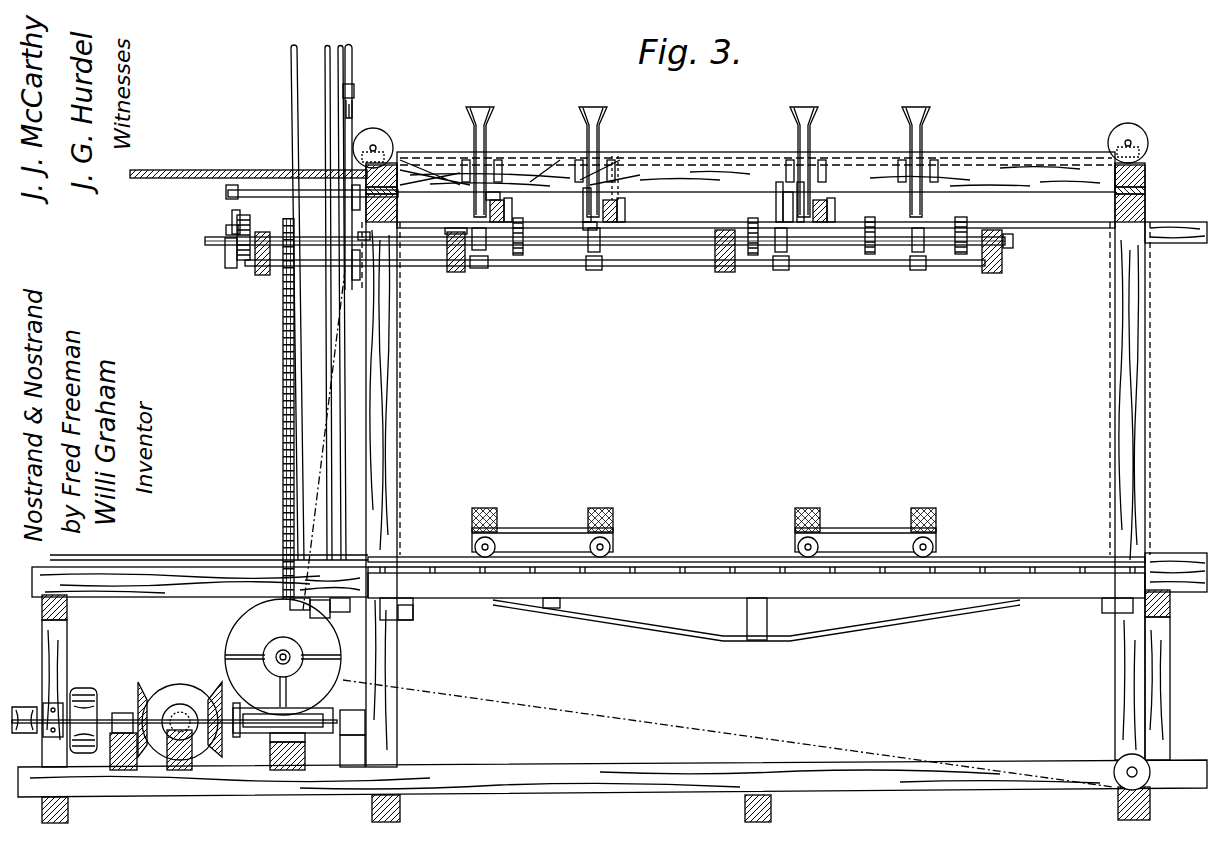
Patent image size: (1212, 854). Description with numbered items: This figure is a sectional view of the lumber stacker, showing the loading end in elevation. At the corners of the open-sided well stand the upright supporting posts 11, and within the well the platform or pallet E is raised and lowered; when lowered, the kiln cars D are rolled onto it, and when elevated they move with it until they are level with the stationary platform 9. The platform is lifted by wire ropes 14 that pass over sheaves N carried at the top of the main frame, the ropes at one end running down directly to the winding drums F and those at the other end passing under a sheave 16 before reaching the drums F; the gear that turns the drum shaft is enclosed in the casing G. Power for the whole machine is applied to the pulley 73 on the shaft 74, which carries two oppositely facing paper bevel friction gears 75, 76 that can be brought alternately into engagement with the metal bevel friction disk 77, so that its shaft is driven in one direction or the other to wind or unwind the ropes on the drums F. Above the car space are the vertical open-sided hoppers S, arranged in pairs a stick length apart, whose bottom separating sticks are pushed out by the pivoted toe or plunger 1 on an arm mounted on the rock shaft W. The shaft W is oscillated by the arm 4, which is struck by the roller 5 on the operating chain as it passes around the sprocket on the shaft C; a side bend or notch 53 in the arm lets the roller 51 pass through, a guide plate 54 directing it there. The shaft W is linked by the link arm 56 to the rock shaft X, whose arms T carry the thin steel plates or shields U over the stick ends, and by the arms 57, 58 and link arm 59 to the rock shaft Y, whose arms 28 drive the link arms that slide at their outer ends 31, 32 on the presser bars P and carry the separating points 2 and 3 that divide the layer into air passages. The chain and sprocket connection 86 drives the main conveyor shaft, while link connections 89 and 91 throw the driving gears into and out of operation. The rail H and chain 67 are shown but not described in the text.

The pivoted toe or plunger 1 is at (518, 258).
The separating point 2 is at (594, 255).
The separating point 3 is at (622, 222).
The arm 4 is at (227, 196).
The roller 5 is at (232, 222).
The stationary platform 9 is at (262, 276).
The upright supporting post 11 is at (397, 410).
The wire rope 14 is at (397, 495).
The sheave 16 is at (1124, 759).
The arm 28 is at (618, 170).
The outer end of link arm 31 is at (778, 208).
The outer end of link arm 32 is at (806, 208).
The roller 51 is at (243, 262).
The side bend or notch 53 is at (230, 235).
The guide plate 54 is at (231, 265).
The link arm 56 is at (362, 283).
The arm 57 is at (354, 126).
The arm 58 is at (353, 58).
The link arm 59 is at (355, 95).
The chain 67 is at (288, 356).
The pulley 73 is at (85, 755).
The shaft 74 is at (105, 718).
The bevel friction gear 75 is at (142, 682).
The bevel friction gear 76 is at (217, 760).
The bevel friction disk 77 is at (182, 688).
The chain and sprocket connection 86 is at (275, 302).
The link connection 89 is at (328, 400).
The link connection 91 is at (343, 435).
The shaft C is at (650, 247).
The kiln car D is at (704, 529).
The platform or pallet E is at (756, 599).
The winding drum F is at (270, 648).
The casing G is at (226, 632).
The rail H is at (180, 570).
The sheave N is at (382, 133).
The presser bar P is at (512, 214).
The hopper S is at (480, 108).
The arm T is at (462, 258).
The movable plate or shield U is at (588, 222).
The rock shaft W is at (688, 224).
The rock shaft X is at (700, 268).
The rock shaft Y is at (668, 162).